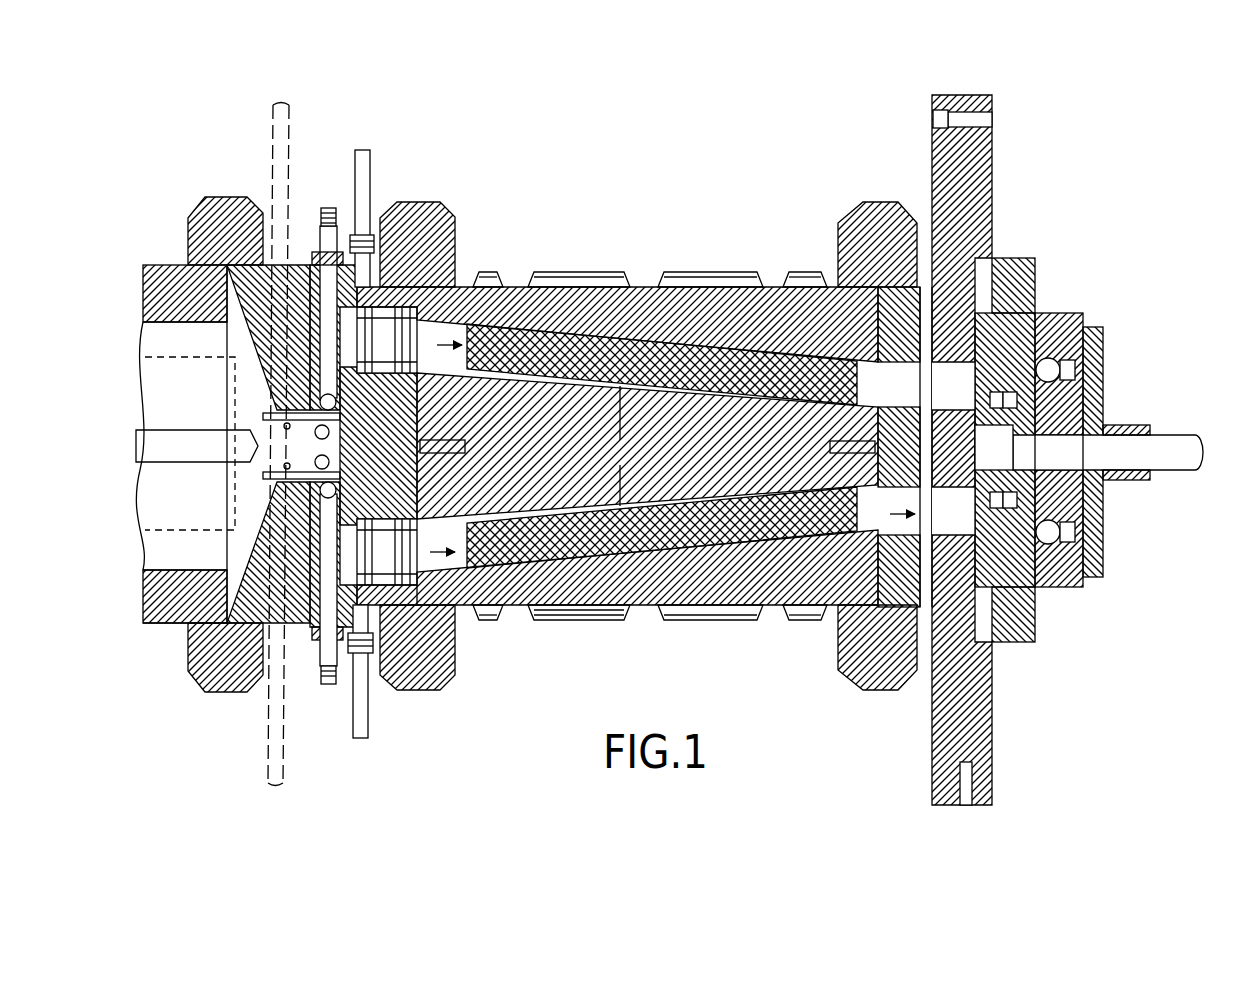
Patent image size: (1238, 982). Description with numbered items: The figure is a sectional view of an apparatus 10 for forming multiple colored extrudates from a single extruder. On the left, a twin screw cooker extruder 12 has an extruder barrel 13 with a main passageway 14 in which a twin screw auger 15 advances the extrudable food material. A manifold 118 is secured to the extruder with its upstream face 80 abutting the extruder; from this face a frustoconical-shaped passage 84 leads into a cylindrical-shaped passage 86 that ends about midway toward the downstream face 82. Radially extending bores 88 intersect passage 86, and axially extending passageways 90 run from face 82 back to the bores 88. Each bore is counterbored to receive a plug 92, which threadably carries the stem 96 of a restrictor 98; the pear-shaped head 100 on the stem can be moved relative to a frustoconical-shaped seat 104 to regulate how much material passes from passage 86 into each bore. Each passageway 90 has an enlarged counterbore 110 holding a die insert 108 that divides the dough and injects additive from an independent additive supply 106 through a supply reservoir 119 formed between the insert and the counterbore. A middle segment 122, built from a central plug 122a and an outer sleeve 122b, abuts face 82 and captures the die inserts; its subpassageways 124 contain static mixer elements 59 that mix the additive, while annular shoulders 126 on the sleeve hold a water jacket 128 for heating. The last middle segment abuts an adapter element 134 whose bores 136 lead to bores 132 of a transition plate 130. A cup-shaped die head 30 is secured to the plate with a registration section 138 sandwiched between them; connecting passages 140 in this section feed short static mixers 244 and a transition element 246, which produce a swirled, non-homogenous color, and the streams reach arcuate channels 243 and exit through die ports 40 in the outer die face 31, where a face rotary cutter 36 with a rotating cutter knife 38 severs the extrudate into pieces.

The apparatus 10 is at (586, 203).
The extruder 12 is at (165, 255).
The extruder barrel 13 is at (157, 625).
The main passageway 14 is at (180, 566).
The twin screw auger 15 is at (190, 443).
The die head 30 is at (1022, 312).
The outer die face 31 is at (1105, 485).
The face rotary cutter 36 is at (1152, 418).
The rotating cutter knife 38 is at (1103, 353).
The die ports 40 is at (1085, 524).
The static mixer elements 59 is at (618, 446).
The upstream face 80 is at (317, 307).
The downstream face 82 is at (415, 413).
The frustoconical-shaped passage 84 is at (227, 350).
The cylindrical-shaped passage 86 is at (300, 462).
The bores 88 is at (300, 428).
The axially extending passageways 90 is at (305, 625).
The plug 92 is at (331, 690).
The stem 96 is at (320, 245).
The restrictor 98 is at (328, 200).
The pear-shaped head 100 is at (300, 403).
The frustoconical-shaped seat 104 is at (280, 473).
The additive supply 106 is at (355, 158).
The die insert 108 is at (400, 300).
The counterbore 110 is at (408, 625).
The manifold 118 is at (266, 262).
The supply reservoir 119 is at (385, 305).
The middle segment 122 is at (620, 268).
The central plug 122a is at (619, 450).
The outer sleeve 122b is at (517, 290).
The subpassageways 124 is at (670, 500).
The annular shoulders 126 is at (456, 623).
The water jacket 128 is at (610, 622).
The transition plate 130 is at (932, 150).
The bores 132 is at (962, 372).
The adapter element 134 is at (918, 612).
The bores 136 is at (619, 450).
The registration section 138 is at (1085, 500).
The connecting passages 140 is at (1060, 560).
The arcuate channel 243 is at (1050, 535).
The static mixers 244 is at (1050, 372).
The transition element 246 is at (1010, 400).